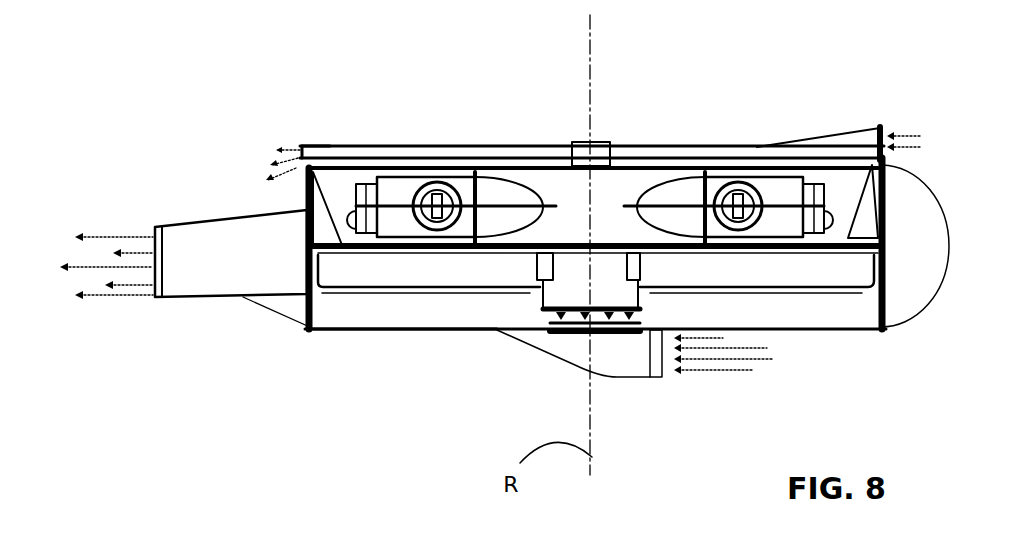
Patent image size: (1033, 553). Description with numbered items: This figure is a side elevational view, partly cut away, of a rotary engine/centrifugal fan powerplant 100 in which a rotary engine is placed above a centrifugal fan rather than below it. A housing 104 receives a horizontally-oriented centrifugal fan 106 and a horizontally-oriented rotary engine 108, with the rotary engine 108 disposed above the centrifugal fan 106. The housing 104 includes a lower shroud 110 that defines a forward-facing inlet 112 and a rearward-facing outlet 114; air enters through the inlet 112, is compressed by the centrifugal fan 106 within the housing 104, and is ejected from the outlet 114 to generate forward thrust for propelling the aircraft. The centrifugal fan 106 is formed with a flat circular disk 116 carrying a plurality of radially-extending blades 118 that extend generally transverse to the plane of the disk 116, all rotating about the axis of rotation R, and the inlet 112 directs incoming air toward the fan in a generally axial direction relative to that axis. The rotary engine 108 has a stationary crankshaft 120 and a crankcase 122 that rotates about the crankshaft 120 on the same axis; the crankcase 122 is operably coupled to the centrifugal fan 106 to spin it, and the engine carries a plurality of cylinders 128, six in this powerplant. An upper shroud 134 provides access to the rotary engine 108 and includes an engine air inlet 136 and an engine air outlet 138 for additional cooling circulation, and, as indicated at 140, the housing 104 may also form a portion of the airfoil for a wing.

The powerplant 100 is at (843, 75).
The housing 104 is at (886, 268).
The centrifugal fan 106 is at (306, 312).
The rotary engine 108 is at (526, 148).
The lower shroud 110 is at (346, 333).
The forward-facing inlet 112 is at (545, 350).
The rearward-facing outlet 114 is at (193, 224).
The flat circular disk 116 is at (790, 248).
The radially-extending blades 118 is at (442, 265).
The stationary crankshaft 120 is at (620, 147).
The crankcase 122 is at (706, 148).
The cylinders 128 is at (431, 148).
The upper shroud 134 is at (762, 145).
The engine air inlet 136 is at (884, 128).
The engine air outlet 138 is at (328, 148).
The airfoil portion 140 is at (920, 308).